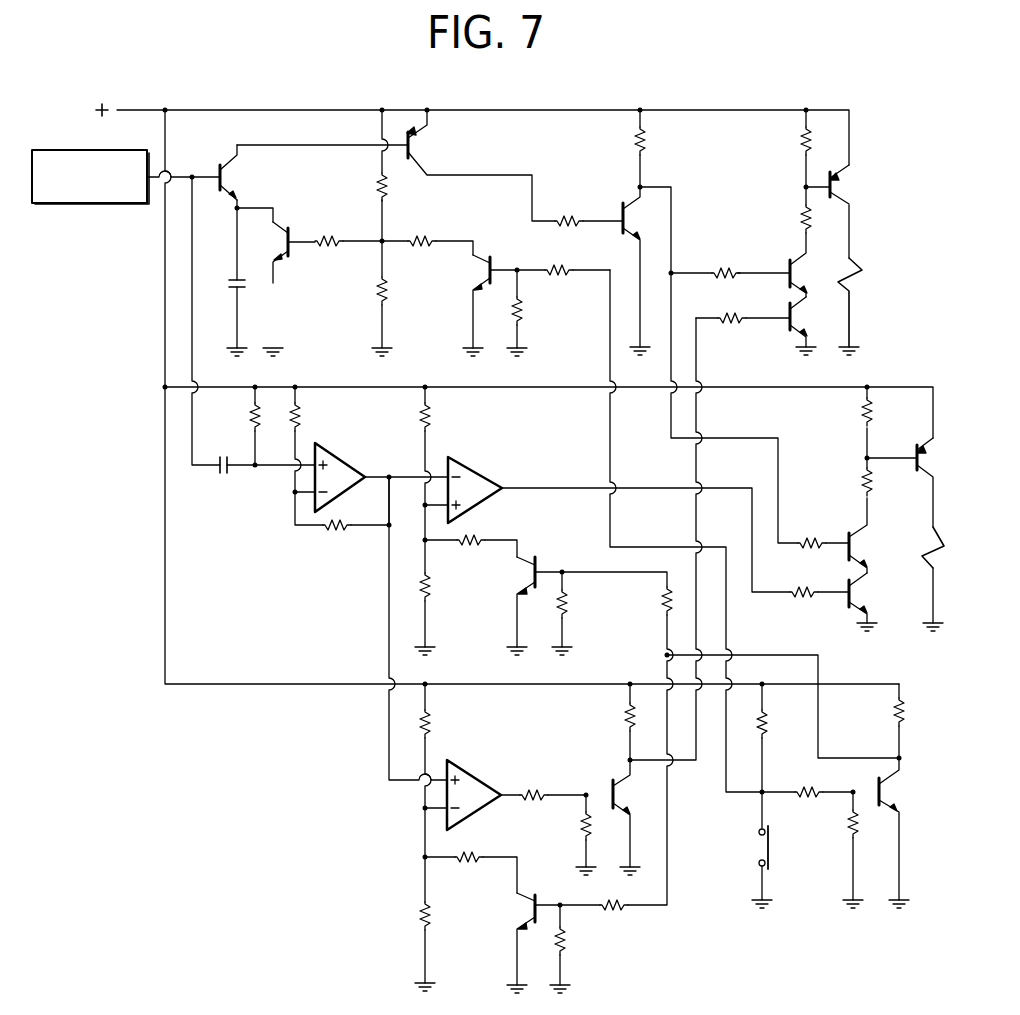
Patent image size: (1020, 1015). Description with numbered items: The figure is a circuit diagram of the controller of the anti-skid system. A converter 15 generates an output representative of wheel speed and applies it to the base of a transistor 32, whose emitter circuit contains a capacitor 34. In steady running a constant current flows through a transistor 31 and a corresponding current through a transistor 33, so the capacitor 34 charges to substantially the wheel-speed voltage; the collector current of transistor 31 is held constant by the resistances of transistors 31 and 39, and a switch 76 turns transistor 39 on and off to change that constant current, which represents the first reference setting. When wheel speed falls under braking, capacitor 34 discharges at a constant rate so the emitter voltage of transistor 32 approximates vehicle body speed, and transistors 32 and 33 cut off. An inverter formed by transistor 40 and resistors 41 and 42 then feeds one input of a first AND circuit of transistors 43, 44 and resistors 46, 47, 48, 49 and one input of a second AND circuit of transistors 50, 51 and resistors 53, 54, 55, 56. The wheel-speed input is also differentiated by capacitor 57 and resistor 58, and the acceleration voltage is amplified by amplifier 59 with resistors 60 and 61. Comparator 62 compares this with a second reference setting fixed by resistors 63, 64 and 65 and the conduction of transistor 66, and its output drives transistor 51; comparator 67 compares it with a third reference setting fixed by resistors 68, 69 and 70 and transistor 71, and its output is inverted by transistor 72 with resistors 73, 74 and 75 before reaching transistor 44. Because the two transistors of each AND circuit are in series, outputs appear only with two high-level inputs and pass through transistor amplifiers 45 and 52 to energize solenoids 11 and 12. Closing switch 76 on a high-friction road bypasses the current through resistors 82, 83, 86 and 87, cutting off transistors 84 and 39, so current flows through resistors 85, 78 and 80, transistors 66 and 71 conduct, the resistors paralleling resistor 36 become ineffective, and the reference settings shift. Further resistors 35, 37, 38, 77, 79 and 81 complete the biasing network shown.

The solenoid 11 is at (852, 258).
The solenoid 12 is at (938, 546).
The converter 15 is at (62, 150).
The transistor 31 is at (286, 241).
The transistor 32 is at (226, 170).
The transistor 33 is at (414, 151).
The capacitor 34 is at (236, 278).
The resistor 35 is at (386, 190).
The resistor 36 is at (380, 296).
The resistor 37 is at (330, 238).
The resistor 38 is at (428, 252).
The transistor 39 is at (486, 272).
The transistor 40 is at (622, 206).
The resistor 41 is at (569, 218).
The resistor 42 is at (637, 141).
The transistor 43 is at (789, 262).
The transistor 44 is at (795, 307).
The transistor amplifier 45 is at (836, 187).
The resistor 46 is at (803, 143).
The resistor 47 is at (803, 216).
The resistor 48 is at (724, 269).
The resistor 49 is at (733, 322).
The transistor 50 is at (853, 548).
The transistor 51 is at (853, 592).
The transistor amplifier 52 is at (918, 447).
The resistor 53 is at (864, 413).
The resistor 54 is at (864, 481).
The resistor 55 is at (810, 540).
The resistor 56 is at (802, 589).
The capacitor 57 is at (225, 476).
The resistor 58 is at (252, 416).
The amplifier 59 is at (344, 448).
The resistor 60 is at (298, 421).
The resistor 61 is at (337, 531).
The comparator 62 is at (478, 467).
The resistor 63 is at (428, 420).
The resistor 64 is at (428, 590).
The resistor 65 is at (480, 536).
The transistor 66 is at (531, 567).
The comparator 67 is at (470, 763).
The resistor 68 is at (428, 724).
The resistor 69 is at (422, 915).
The resistor 70 is at (468, 862).
The transistor 71 is at (530, 912).
The transistor 72 is at (612, 781).
The resistor 73 is at (534, 791).
The resistor 74 is at (583, 828).
The resistor 75 is at (627, 713).
The switch 76 is at (770, 851).
The resistor 77 is at (766, 726).
The resistor 78 is at (664, 604).
The resistor 79 is at (566, 598).
The resistor 80 is at (616, 910).
The resistor 81 is at (564, 950).
The resistor 82 is at (805, 789).
The resistor 83 is at (850, 826).
The transistor 84 is at (884, 791).
The resistor 85 is at (896, 713).
The resistor 86 is at (557, 267).
The resistor 87 is at (521, 308).